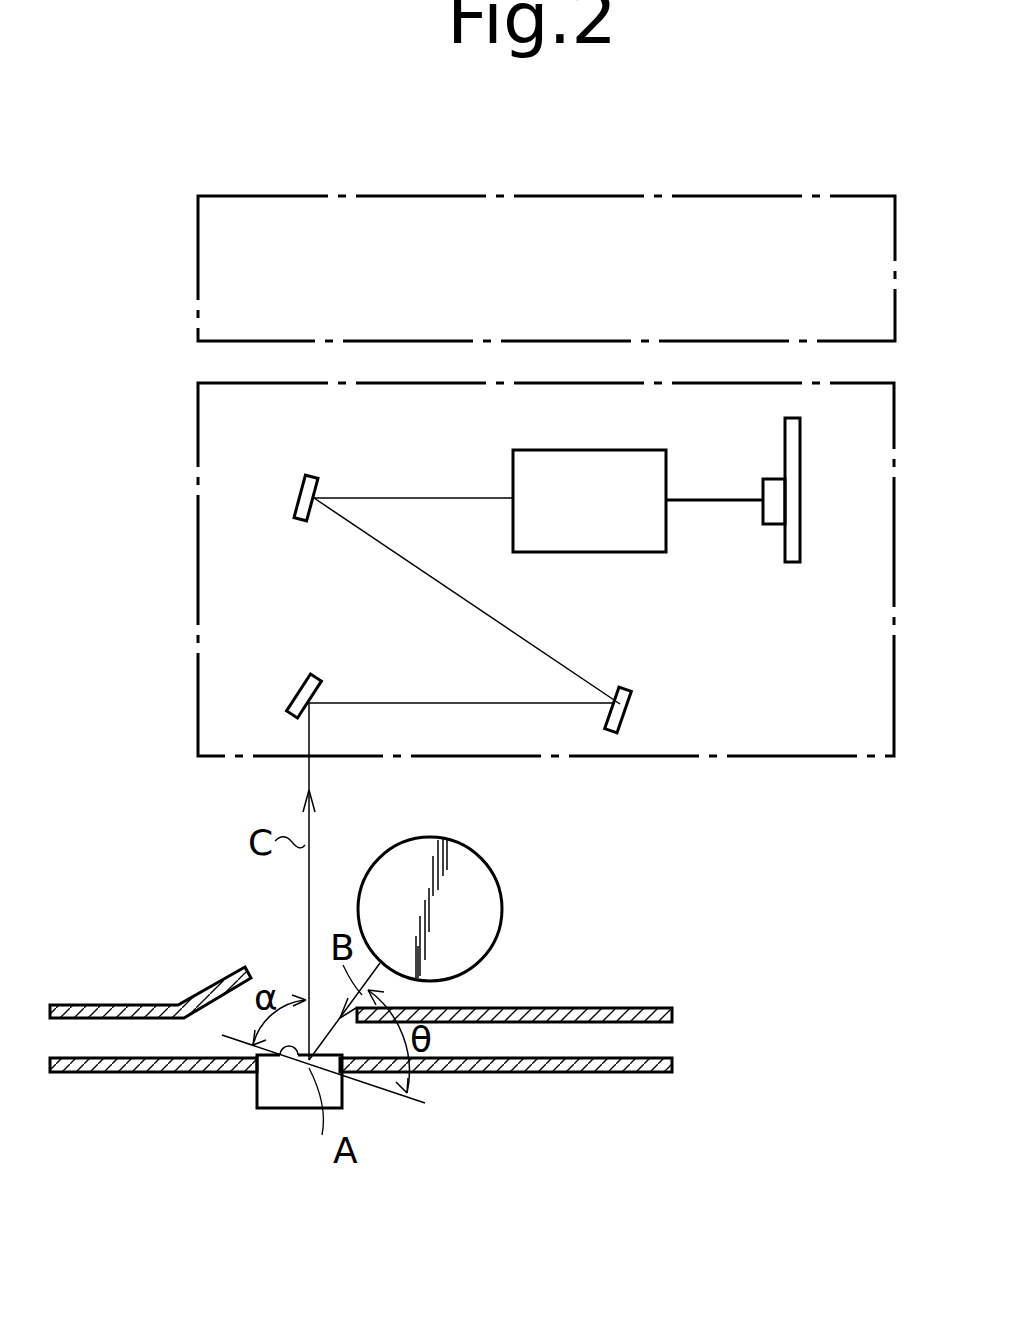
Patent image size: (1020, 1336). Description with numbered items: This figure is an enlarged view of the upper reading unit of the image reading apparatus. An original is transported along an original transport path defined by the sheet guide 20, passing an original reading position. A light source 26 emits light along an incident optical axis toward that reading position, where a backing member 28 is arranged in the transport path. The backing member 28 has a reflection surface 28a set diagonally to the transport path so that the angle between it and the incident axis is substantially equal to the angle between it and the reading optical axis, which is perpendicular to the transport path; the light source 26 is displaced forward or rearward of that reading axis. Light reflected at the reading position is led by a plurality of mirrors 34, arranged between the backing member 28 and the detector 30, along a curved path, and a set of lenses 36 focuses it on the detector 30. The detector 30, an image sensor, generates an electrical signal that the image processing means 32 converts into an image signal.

The sheet guide 20 is at (608, 1008).
The light source 26 is at (475, 858).
The backing member 28 is at (287, 1103).
The reflection surface 28a is at (288, 1046).
The detector 30 is at (802, 452).
The image processing means 32 is at (836, 196).
The mirrors 34 is at (302, 488).
The set of lenses 36 is at (640, 456).